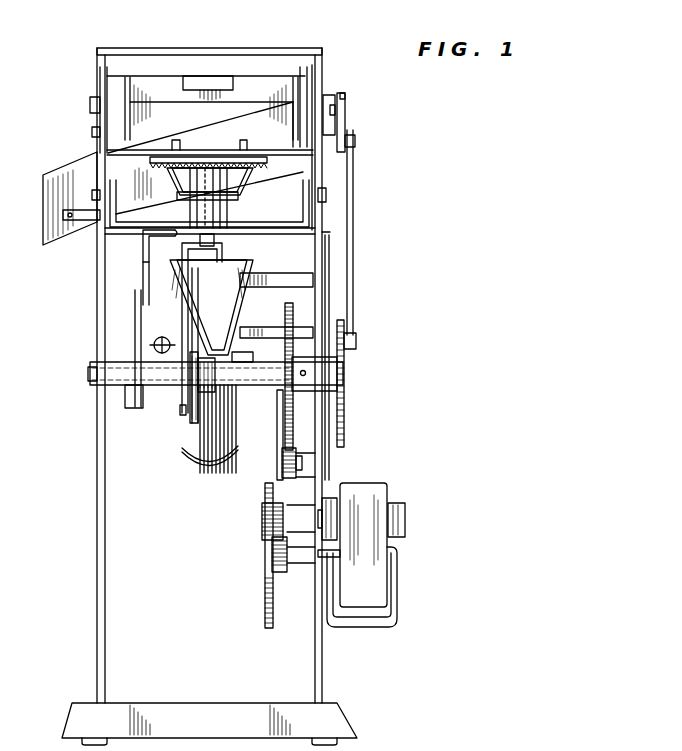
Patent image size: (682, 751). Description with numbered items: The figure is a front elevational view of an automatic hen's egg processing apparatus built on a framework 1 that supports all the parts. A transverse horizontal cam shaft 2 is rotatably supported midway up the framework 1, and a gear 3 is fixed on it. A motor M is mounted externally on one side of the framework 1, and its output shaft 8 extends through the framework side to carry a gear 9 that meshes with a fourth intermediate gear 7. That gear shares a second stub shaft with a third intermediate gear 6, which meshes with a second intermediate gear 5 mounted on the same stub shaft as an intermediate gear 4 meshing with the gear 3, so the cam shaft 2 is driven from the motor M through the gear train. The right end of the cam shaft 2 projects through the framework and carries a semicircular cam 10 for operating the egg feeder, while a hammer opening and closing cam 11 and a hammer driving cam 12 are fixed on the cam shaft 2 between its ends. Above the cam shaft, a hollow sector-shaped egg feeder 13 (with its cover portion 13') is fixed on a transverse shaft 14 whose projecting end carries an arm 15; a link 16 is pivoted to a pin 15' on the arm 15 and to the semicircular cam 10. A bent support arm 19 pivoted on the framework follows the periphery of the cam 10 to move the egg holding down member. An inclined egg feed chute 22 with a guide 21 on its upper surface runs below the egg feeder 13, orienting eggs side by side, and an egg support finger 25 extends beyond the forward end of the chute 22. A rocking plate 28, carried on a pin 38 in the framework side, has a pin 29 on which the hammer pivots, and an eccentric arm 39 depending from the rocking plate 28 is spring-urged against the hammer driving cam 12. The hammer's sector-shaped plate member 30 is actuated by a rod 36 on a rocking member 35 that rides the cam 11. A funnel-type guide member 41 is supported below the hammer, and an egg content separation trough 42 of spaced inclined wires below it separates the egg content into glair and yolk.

The framework 1 is at (97, 412).
The cam shaft 2 is at (262, 393).
The gear 3 is at (285, 307).
The intermediate gear 4 is at (297, 462).
The second intermediate gear 5 is at (280, 447).
The third intermediate gear 6 is at (272, 560).
The fourth intermediate gear 7 is at (265, 598).
The output shaft 8 is at (338, 500).
The gear 9 is at (262, 528).
The semicircular cam 10 is at (345, 410).
The hammer opening and closing cam 11 is at (192, 420).
The hammer driving cam 12 is at (135, 330).
The egg feeder 13 is at (236, 88).
The hopper cover 13' is at (224, 56).
The transverse shaft 14 is at (113, 103).
The arm 15 is at (362, 122).
The pin 15' is at (377, 143).
The link 16 is at (354, 240).
The bent support arm 19 is at (330, 270).
The guide 21 is at (307, 90).
The egg feed chute 22 is at (200, 127).
The egg support finger 25 is at (258, 168).
The rocking plate 28 is at (323, 232).
The pin 29 is at (144, 267).
The sector-shaped plate member 30 is at (168, 218).
The rocking member 35 is at (185, 280).
The rod 36 is at (224, 246).
The pin 38 is at (90, 198).
The eccentric arm 39 is at (147, 262).
The funnel-type guide member 41 is at (250, 270).
The egg content separation trough 42 is at (195, 473).
The motor M is at (370, 503).